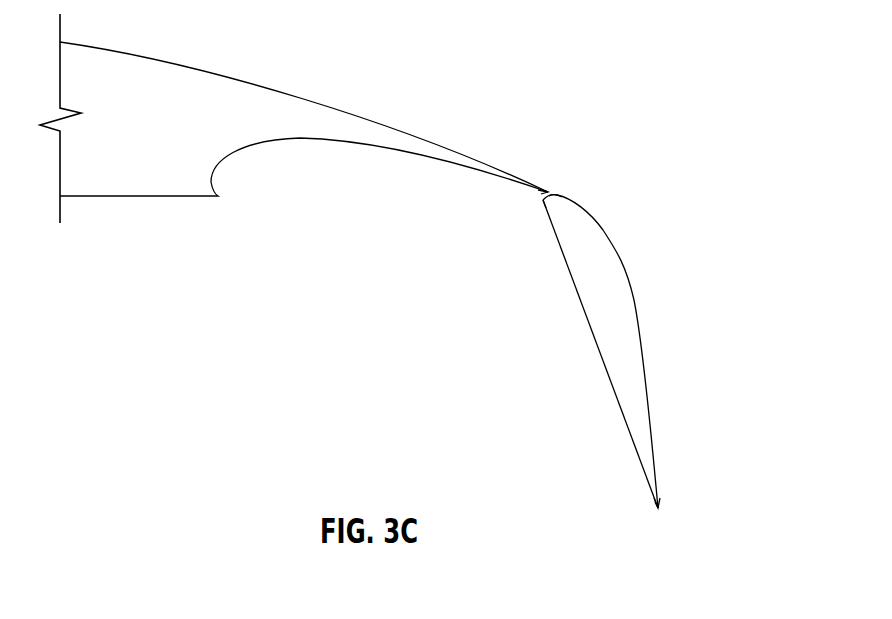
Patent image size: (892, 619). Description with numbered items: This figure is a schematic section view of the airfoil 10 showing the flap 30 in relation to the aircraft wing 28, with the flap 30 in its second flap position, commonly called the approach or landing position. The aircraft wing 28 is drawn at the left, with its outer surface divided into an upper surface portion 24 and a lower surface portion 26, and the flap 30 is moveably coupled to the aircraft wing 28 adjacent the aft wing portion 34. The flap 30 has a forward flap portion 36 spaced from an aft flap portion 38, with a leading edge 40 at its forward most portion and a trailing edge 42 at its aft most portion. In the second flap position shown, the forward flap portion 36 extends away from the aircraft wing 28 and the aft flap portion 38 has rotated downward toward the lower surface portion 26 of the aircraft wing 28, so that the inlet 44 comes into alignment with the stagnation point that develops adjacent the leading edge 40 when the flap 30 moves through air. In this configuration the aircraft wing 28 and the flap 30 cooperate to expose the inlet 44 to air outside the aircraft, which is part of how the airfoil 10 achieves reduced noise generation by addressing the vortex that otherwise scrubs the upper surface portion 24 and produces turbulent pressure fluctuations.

The airfoil 10 is at (267, 41).
The upper surface portion 24 is at (643, 354).
The lower surface portion 26 is at (602, 363).
The aircraft wing 28 is at (296, 92).
The flap 30 is at (630, 357).
The aft wing portion 34 is at (545, 194).
The forward flap portion 36 is at (559, 196).
The aft flap portion 38 is at (660, 506).
The leading edge 40 is at (550, 191).
The trailing edge 42 is at (660, 510).
The inlet 44 is at (547, 205).